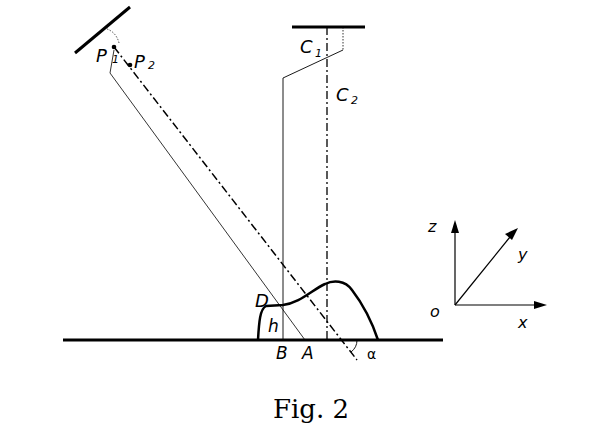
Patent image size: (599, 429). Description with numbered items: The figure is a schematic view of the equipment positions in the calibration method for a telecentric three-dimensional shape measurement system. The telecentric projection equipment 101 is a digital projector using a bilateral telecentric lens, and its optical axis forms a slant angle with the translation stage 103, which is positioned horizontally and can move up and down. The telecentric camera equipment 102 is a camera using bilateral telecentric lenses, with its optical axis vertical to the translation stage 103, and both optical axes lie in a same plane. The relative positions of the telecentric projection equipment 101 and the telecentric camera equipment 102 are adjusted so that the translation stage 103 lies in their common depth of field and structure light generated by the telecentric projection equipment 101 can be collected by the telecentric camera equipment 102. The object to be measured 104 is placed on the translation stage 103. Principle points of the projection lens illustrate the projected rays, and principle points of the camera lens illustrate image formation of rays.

The telecentric projection equipment 101 is at (89, 38).
The telecentric camera equipment 102 is at (405, 44).
The translation stage 103 is at (162, 340).
The object to be measured 104 is at (403, 268).